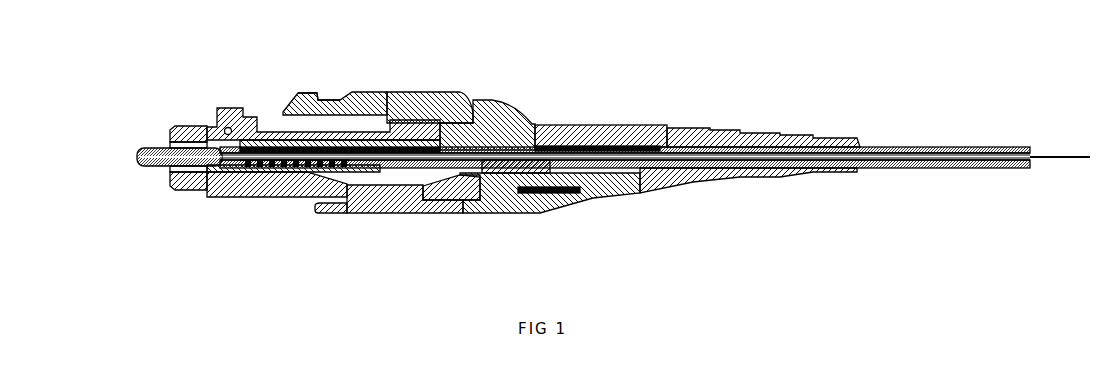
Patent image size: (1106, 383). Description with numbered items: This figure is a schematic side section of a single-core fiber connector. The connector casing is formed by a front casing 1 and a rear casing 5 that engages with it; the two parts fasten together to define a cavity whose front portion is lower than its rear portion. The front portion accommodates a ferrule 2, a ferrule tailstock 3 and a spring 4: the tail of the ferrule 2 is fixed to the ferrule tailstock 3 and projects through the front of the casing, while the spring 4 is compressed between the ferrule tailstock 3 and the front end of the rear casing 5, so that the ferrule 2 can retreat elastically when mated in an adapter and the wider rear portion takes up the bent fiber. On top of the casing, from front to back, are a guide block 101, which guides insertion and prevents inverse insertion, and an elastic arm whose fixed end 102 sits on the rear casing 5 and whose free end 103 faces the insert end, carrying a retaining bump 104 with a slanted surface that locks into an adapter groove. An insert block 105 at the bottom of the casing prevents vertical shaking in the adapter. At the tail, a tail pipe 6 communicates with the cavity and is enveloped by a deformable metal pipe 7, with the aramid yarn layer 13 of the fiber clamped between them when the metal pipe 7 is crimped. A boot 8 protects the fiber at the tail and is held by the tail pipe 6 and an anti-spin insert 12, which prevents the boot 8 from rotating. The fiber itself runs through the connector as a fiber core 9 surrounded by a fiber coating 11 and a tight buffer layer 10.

The front casing 1 is at (222, 197).
The ferrule 2 is at (152, 150).
The ferrule tailstock 3 is at (210, 118).
The spring 4 is at (295, 170).
The rear casing 5 is at (497, 213).
The tail pipe 6 is at (519, 140).
The metal pipe 7 is at (598, 125).
The boot 8 is at (690, 123).
The fiber core 9 is at (1065, 157).
The tight buffer layer 10 is at (985, 147).
The fiber coating 11 is at (918, 147).
The anti-spin insert 12 is at (558, 193).
The aramid yarn layer 13 is at (557, 137).
The guide block 101 is at (232, 108).
The fixed end 102 is at (470, 113).
The free end 103 is at (348, 100).
The retaining bump 104 is at (307, 86).
The insert block 105 is at (318, 212).